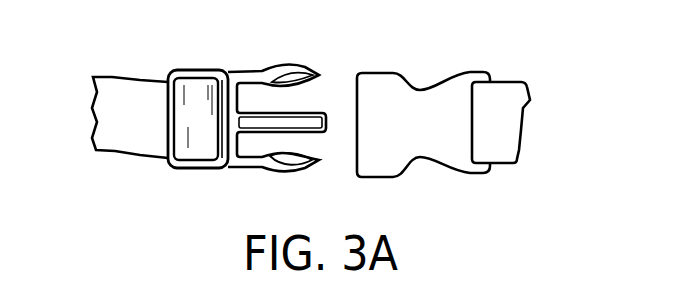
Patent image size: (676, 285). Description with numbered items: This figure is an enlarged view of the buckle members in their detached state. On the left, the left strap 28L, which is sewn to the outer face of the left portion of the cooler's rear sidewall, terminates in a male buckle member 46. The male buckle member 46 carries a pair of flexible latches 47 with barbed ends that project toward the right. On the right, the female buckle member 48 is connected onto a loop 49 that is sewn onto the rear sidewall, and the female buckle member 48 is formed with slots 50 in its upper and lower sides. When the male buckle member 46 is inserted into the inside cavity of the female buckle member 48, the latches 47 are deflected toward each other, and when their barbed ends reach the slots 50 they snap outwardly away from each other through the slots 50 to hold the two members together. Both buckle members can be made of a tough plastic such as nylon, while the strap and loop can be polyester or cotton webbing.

The left strap 28L is at (125, 97).
The male buckle member 46 is at (202, 70).
The flexible latch 47 is at (256, 70).
The female buckle member 48 is at (383, 98).
The loop 49 is at (507, 100).
The slot 50 is at (415, 88).